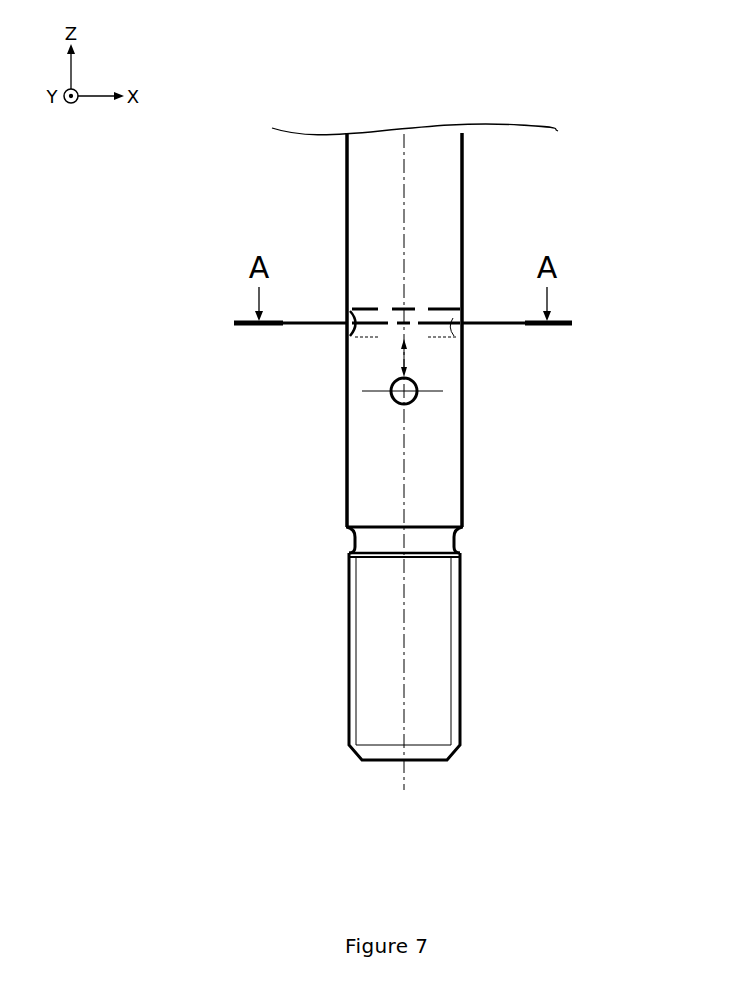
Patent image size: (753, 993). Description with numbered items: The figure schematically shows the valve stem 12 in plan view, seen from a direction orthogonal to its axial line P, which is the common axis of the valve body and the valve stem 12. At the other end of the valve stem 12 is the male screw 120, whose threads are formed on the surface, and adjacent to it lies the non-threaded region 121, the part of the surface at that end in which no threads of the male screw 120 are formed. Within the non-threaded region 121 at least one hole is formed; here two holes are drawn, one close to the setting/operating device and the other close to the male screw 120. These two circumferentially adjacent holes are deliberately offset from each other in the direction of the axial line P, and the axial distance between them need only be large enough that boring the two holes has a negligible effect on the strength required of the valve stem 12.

The valve stem 12 is at (634, 119).
The non-threaded region 121 is at (447, 475).
The male screw 120 is at (443, 655).
The axial line P is at (406, 782).